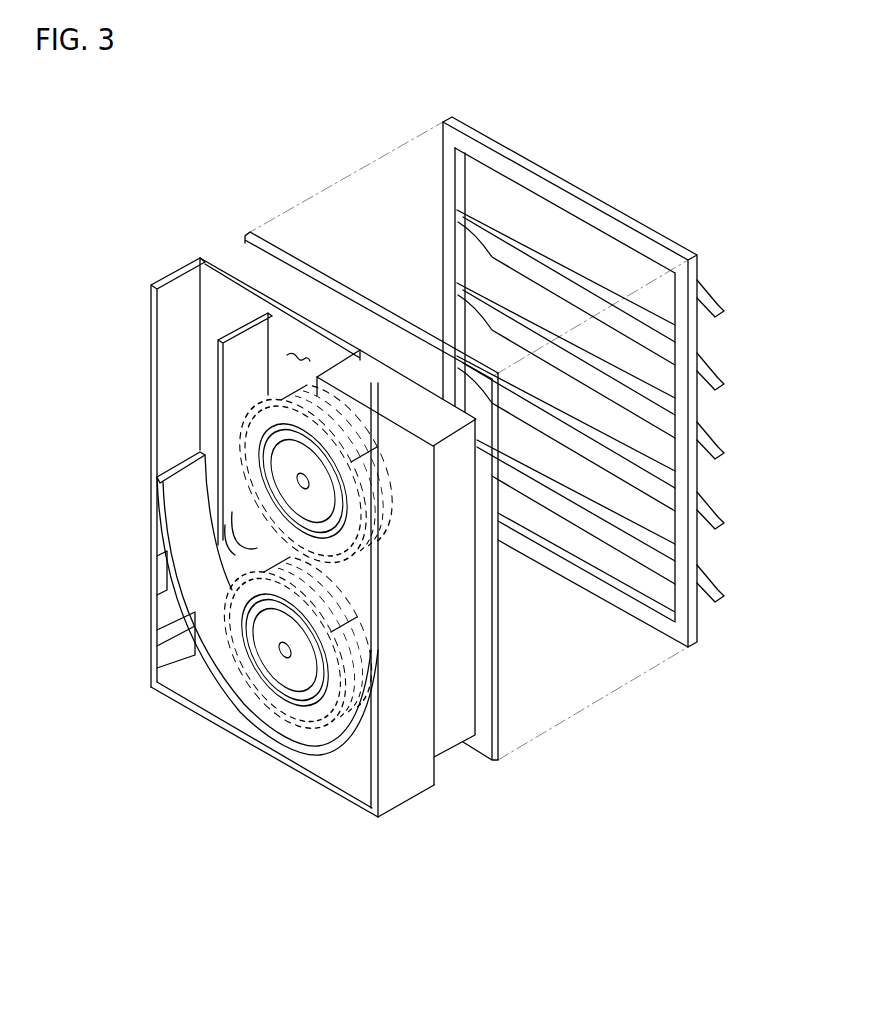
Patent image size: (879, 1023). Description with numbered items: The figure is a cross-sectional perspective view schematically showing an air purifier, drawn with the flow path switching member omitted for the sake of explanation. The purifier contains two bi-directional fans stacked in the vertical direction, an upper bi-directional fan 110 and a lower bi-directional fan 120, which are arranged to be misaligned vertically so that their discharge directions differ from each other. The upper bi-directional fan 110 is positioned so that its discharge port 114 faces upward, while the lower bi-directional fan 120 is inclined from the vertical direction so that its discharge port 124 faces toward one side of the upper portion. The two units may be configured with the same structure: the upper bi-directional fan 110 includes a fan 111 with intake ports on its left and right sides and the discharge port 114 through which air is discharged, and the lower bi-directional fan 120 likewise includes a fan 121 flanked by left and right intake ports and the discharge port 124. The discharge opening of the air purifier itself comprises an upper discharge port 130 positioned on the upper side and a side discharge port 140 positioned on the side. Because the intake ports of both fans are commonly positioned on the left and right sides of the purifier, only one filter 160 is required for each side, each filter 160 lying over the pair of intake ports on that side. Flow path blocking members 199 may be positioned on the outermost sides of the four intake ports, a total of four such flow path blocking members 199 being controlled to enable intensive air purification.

The upper bi-directional fan 110 is at (392, 548).
The fan 111 is at (258, 478).
The discharge port 114 is at (303, 353).
The lower bi-directional fan 120 is at (363, 728).
The fan 121 is at (243, 605).
The discharge port 124 is at (193, 537).
The upper discharge port 130 is at (293, 345).
The side discharge port 140 is at (170, 404).
The filter 160 is at (410, 347).
The flow path blocking member 199 is at (716, 366).